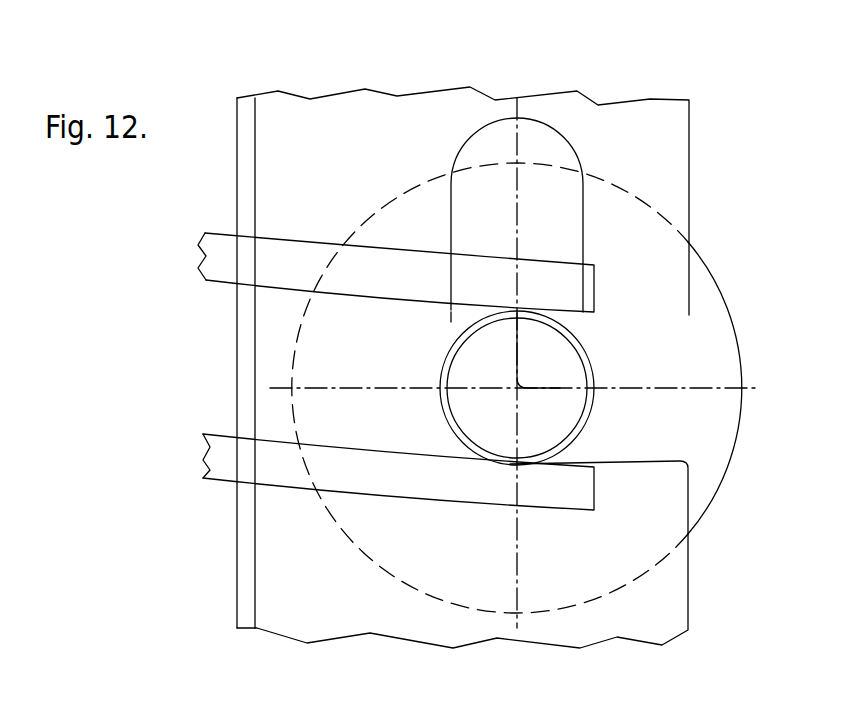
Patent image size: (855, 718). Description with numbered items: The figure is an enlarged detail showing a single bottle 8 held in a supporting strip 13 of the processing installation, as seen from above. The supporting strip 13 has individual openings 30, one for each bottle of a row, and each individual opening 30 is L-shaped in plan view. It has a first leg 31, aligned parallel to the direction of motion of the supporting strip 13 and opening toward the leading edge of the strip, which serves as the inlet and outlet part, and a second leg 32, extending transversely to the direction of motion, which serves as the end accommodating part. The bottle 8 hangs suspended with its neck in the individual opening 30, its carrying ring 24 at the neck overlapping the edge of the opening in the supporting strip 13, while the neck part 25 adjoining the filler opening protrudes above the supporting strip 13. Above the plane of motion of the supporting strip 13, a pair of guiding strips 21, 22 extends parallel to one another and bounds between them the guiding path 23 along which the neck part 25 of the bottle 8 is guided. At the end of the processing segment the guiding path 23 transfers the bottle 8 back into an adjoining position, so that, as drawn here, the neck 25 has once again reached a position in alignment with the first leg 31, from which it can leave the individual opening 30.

The bottle 8 is at (735, 340).
The supporting strip 13 is at (422, 113).
The guiding strip 21 is at (278, 488).
The guiding strip 22 is at (285, 270).
The guiding path 23 is at (268, 415).
The carrying ring 24 is at (441, 400).
The neck part 25 is at (604, 371).
The individual opening 30 is at (438, 325).
The first leg 31 is at (632, 458).
The second leg 32 is at (585, 202).